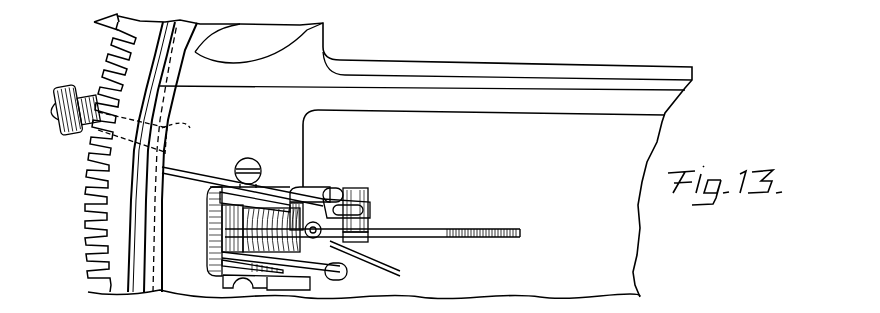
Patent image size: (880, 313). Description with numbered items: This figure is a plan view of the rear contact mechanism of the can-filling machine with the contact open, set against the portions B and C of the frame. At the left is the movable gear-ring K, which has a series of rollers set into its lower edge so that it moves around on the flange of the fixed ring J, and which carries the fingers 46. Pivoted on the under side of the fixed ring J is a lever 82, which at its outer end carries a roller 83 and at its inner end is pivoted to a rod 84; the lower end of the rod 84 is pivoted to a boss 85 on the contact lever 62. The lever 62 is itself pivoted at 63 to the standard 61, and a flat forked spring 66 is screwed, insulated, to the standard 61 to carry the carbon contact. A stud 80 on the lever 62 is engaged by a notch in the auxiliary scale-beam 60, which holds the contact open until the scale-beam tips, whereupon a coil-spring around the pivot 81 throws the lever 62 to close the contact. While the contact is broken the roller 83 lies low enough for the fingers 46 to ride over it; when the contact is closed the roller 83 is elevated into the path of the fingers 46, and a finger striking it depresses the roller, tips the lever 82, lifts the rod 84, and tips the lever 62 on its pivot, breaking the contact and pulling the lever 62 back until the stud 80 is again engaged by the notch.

The body upper portion B is at (300, 35).
The body lower portion C is at (386, 192).
The fixed ring J is at (168, 105).
The movable gear-ring K is at (112, 275).
The fingers 46 is at (96, 24).
The auxiliary scale-beam 60 is at (421, 230).
The standard 61 is at (212, 265).
The lever 62 is at (387, 270).
The pivot 63 is at (317, 185).
The flat forked spring 66 is at (343, 187).
The stud 80 is at (338, 250).
The pivot 81 is at (125, 152).
The lever 82 is at (167, 133).
The roller 83 is at (54, 132).
The rod 84 is at (371, 212).
The boss 85 is at (368, 225).